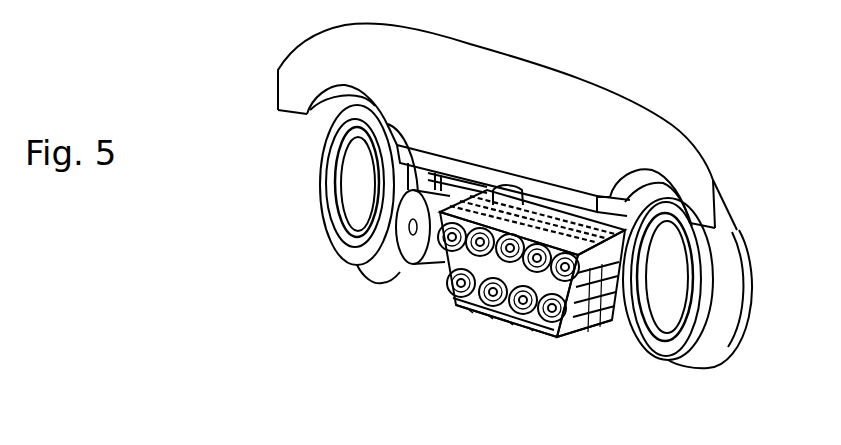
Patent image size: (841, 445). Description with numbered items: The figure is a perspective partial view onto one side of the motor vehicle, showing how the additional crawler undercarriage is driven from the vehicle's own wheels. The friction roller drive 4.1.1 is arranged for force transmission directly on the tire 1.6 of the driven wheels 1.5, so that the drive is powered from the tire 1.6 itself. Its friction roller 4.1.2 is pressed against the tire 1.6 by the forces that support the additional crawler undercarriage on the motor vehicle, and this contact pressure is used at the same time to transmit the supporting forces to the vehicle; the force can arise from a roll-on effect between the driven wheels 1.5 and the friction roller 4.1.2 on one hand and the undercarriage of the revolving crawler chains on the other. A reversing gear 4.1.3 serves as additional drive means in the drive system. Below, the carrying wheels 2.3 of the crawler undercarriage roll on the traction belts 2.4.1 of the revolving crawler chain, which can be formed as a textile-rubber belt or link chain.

The driven wheels 1.5 is at (391, 253).
The tire 1.6 is at (395, 168).
The friction roller drive 4.1.1 is at (402, 186).
The friction roller 4.1.2 is at (367, 274).
The reversing gear 4.1.3 is at (453, 295).
The carrying wheels 2.3 is at (513, 327).
The traction belts 2.4.1 is at (593, 330).